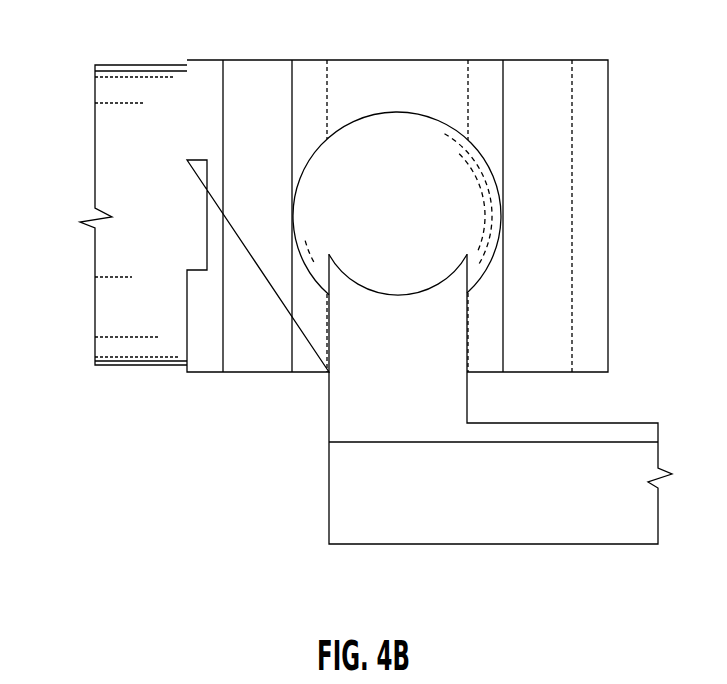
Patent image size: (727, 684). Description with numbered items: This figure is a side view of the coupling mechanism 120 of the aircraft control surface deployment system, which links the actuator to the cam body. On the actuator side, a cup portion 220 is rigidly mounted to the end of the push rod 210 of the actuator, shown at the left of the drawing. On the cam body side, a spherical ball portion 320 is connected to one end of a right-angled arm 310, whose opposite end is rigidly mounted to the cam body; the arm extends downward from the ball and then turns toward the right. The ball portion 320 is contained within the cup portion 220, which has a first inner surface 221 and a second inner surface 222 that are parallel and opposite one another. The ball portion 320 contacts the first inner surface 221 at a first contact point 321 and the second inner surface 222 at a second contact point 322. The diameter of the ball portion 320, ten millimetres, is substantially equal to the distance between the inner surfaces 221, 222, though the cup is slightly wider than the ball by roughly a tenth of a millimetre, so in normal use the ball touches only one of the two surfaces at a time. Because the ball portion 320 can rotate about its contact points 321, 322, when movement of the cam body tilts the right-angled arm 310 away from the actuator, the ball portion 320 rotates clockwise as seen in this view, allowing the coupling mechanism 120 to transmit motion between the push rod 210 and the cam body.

The coupling mechanism 120 is at (260, 477).
The push rod 210 is at (113, 257).
The cup portion 220 is at (408, 92).
The first inner surface 221 is at (290, 353).
The second inner surface 222 is at (503, 318).
The right-angled arm 310 is at (562, 533).
The ball portion 320 is at (352, 127).
The first contact point 321 is at (293, 213).
The second contact point 322 is at (500, 207).